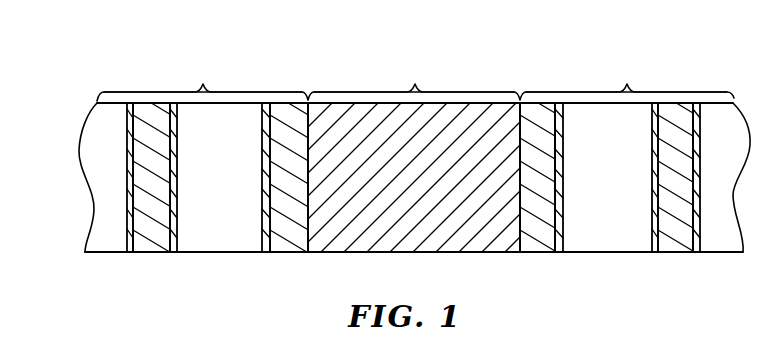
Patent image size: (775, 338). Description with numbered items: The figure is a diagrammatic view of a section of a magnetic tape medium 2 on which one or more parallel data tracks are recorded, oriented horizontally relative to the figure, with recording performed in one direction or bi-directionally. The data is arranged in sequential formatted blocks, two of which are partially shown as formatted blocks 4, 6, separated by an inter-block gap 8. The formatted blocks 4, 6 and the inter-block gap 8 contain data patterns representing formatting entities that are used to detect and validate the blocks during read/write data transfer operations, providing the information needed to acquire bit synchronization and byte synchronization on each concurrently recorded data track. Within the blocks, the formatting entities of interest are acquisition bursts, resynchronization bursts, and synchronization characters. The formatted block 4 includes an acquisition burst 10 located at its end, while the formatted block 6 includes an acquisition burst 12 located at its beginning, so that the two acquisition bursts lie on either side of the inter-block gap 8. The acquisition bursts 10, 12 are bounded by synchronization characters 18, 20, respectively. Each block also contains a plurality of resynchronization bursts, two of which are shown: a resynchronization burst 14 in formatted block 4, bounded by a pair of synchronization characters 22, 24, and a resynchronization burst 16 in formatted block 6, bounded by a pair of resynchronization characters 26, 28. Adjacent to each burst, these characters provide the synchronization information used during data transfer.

The magnetic tape medium 2 is at (100, 76).
The formatted block 4 is at (203, 72).
The formatted block 6 is at (626, 71).
The inter-block gap 8 is at (414, 71).
The acquisition burst 10 is at (288, 253).
The acquisition burst 12 is at (545, 253).
The resynchronization burst 14 is at (153, 253).
The resynchronization burst 16 is at (675, 253).
The synchronization character 18 is at (266, 253).
The synchronization character 20 is at (562, 253).
The synchronization character 22 is at (132, 253).
The synchronization character 24 is at (173, 253).
The resynchronization character 26 is at (653, 253).
The resynchronization character 28 is at (697, 253).